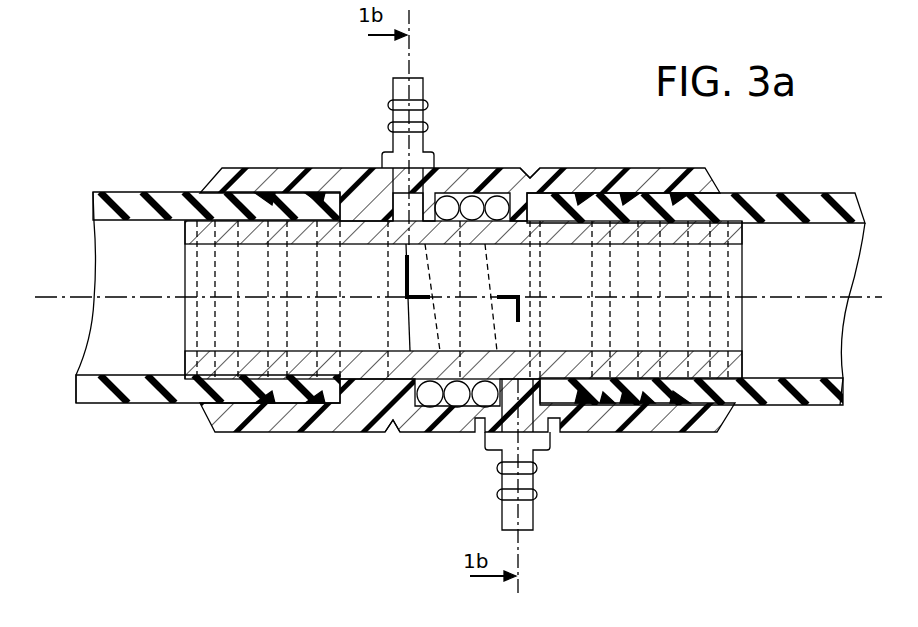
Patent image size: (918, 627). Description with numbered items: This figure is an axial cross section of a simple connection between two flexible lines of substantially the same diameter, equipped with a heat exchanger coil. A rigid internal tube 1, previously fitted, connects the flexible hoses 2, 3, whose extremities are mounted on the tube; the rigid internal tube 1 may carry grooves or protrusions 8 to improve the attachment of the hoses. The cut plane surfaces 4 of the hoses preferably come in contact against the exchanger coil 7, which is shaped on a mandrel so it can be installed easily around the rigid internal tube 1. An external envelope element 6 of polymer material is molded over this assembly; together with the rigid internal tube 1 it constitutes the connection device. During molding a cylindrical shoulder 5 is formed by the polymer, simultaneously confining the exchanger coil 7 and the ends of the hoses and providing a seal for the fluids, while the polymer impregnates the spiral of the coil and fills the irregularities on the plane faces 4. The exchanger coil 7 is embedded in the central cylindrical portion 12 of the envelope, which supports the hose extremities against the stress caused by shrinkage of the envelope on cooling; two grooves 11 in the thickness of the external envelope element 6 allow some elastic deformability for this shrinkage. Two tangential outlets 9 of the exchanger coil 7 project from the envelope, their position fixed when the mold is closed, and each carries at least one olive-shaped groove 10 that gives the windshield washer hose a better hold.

The rigid internal tube 1 is at (253, 397).
The flexible hose 2 is at (136, 198).
The flexible hose 3 is at (765, 208).
The plane surfaces 4 is at (612, 176).
The cylindrical shoulder 5 is at (515, 175).
The external envelope element 6 is at (272, 178).
The exchanger coil 7 is at (413, 432).
The grooves or protrusions 8 is at (657, 387).
The tangential outlets 9 is at (530, 484).
The olive-shaped groove 10 is at (494, 499).
The grooves 11 is at (535, 165).
The central cylindrical portion 12 is at (513, 72).